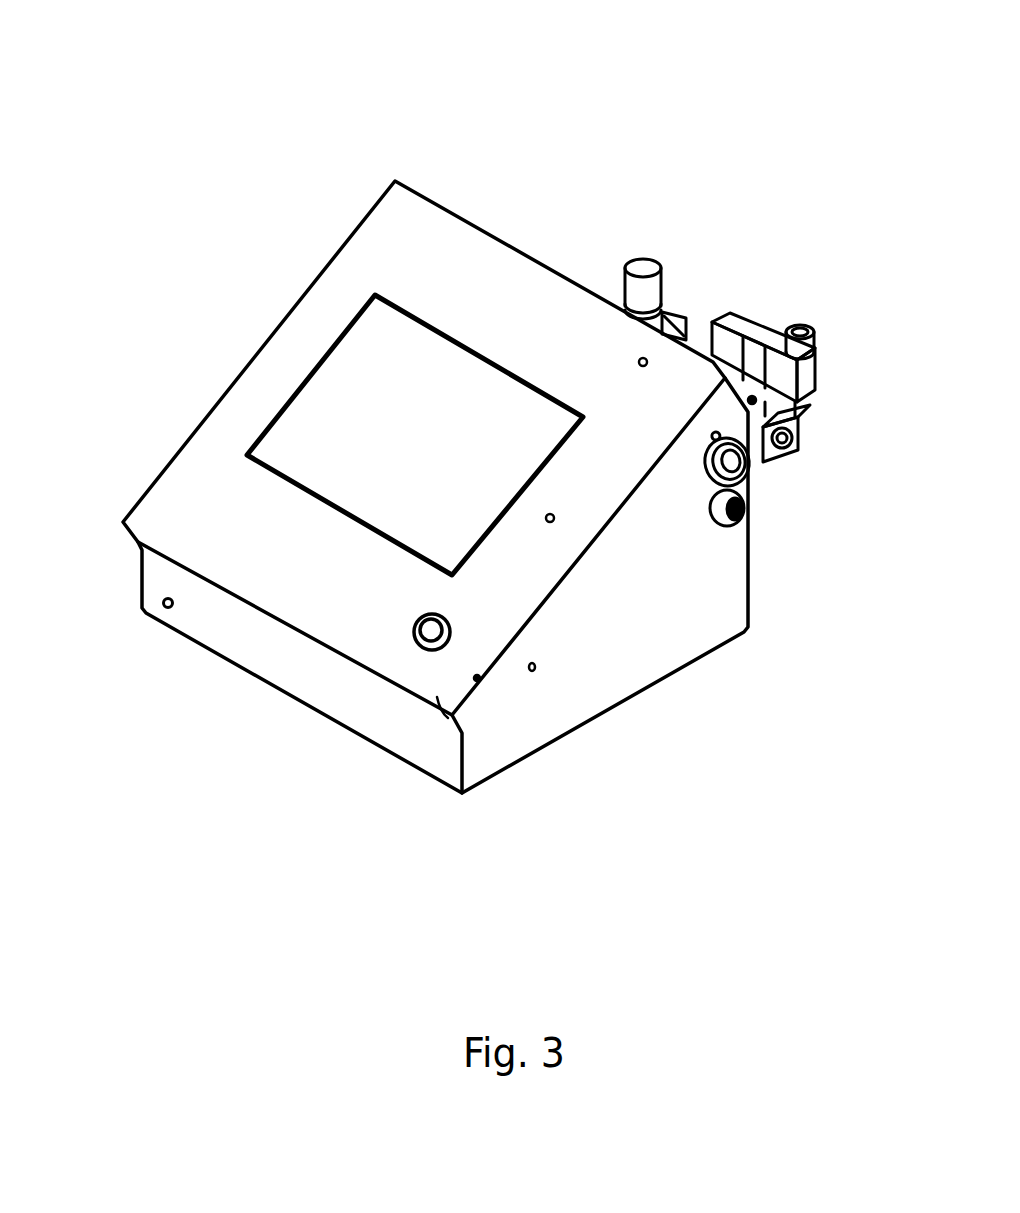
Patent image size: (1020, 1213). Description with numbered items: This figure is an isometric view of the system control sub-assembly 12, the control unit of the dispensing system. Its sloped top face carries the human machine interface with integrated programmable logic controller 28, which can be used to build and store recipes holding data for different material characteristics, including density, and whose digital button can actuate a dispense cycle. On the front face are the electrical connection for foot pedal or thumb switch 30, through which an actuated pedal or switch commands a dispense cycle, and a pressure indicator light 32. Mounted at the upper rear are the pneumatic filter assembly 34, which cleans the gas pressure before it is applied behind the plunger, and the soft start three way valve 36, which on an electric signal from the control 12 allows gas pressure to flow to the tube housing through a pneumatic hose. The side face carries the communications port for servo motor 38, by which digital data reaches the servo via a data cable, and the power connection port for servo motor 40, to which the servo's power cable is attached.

The system control sub-assembly 12 is at (393, 180).
The human machine interface with integrated programmable logic controller 28 is at (280, 407).
The electrical connection for foot pedal or thumb switch 30 is at (170, 612).
The pressure indicator light 32 is at (425, 645).
The pneumatic filter assembly 34 is at (665, 257).
The soft start three way valve 36 is at (768, 316).
The communications port for servo motor 38 is at (742, 478).
The power connection port for servo motor 40 is at (750, 527).